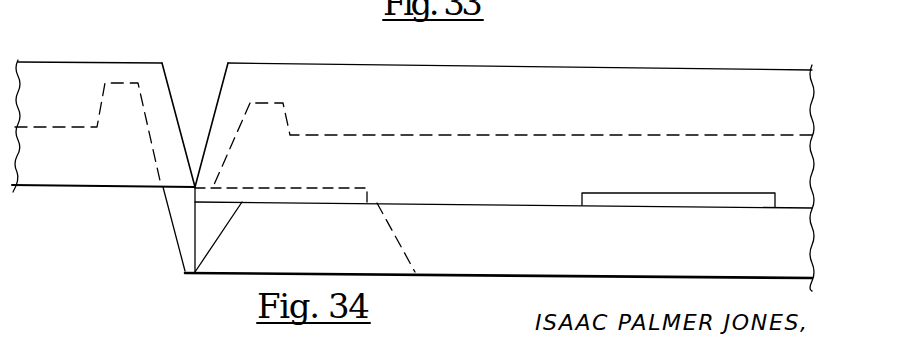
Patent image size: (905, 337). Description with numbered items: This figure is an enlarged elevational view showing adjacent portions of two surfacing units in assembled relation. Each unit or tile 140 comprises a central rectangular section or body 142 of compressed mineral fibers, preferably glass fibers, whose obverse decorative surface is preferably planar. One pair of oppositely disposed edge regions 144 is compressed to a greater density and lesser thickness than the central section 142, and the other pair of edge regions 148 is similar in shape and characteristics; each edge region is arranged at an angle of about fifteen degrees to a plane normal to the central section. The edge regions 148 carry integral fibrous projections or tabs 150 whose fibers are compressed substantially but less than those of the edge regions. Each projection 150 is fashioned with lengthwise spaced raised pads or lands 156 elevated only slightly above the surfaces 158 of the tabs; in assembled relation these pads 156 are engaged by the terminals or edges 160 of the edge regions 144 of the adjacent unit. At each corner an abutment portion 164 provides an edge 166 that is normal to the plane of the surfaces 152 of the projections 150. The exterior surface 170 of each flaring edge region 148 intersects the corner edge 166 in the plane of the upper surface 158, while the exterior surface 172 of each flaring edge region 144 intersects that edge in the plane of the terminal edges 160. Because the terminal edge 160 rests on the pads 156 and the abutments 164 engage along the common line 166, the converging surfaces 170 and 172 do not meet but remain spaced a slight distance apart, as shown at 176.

The unit or tile 140 is at (27, 62).
The central section or body 142 is at (57, 62).
The edge regions 144 is at (233, 110).
The edge regions 148 is at (148, 96).
The projections or tabs 150 is at (514, 256).
The surfaces of the projections 152 is at (542, 278).
The pads or lands 156 is at (320, 187).
The surfaces of the tabs 158 is at (536, 204).
The terminals or edges 160 is at (230, 166).
The abutment portion 164 is at (178, 215).
The edge 166 is at (195, 238).
The exterior surface 170 is at (167, 82).
The exterior surface 172 is at (222, 76).
The space 176 is at (193, 172).